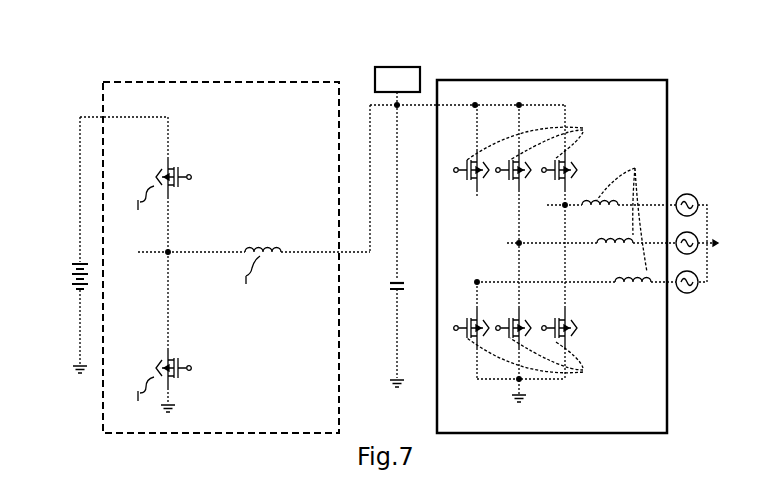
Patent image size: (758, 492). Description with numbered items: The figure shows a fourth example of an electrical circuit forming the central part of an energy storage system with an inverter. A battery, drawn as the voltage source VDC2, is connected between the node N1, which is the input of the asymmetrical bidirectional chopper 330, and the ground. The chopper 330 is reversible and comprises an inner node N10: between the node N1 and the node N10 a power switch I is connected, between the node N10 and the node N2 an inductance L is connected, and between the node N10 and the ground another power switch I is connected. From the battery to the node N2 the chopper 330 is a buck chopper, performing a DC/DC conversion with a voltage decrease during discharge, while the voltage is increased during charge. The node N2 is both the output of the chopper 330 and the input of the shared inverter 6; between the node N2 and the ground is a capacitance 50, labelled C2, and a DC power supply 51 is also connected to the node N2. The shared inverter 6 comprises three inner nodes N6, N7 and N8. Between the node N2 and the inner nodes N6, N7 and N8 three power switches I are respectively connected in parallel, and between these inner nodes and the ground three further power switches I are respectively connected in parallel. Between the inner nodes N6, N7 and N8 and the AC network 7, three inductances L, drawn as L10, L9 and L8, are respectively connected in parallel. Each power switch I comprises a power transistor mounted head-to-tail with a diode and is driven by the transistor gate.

The asymmetrical bidirectional chopper 330 is at (220, 434).
The DC power supply 51 is at (392, 64).
The capacitance 50 is at (389, 288).
The shared inverter 6 is at (555, 434).
The AC network 7 is at (704, 295).
The node N1 is at (93, 114).
The node N2 is at (402, 108).
The inner node N6 is at (475, 282).
The inner node N7 is at (507, 243).
The inner node N8 is at (547, 205).
The inner node N10 is at (139, 252).
The battery voltage source VDC2 is at (70, 288).
The capacitor C2 is at (407, 288).
The phase inductor L8 is at (620, 196).
The phase inductor L9 is at (597, 234).
The phase inductor L10 is at (576, 273).
The inductance L is at (622, 212).
The power switch I is at (528, 252).